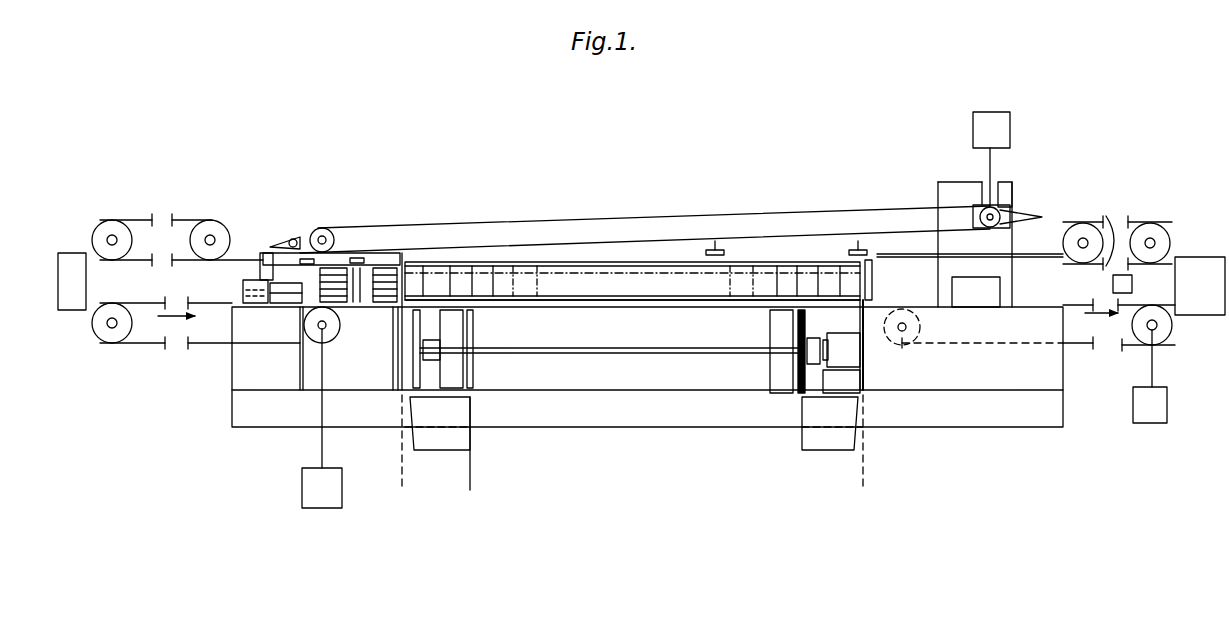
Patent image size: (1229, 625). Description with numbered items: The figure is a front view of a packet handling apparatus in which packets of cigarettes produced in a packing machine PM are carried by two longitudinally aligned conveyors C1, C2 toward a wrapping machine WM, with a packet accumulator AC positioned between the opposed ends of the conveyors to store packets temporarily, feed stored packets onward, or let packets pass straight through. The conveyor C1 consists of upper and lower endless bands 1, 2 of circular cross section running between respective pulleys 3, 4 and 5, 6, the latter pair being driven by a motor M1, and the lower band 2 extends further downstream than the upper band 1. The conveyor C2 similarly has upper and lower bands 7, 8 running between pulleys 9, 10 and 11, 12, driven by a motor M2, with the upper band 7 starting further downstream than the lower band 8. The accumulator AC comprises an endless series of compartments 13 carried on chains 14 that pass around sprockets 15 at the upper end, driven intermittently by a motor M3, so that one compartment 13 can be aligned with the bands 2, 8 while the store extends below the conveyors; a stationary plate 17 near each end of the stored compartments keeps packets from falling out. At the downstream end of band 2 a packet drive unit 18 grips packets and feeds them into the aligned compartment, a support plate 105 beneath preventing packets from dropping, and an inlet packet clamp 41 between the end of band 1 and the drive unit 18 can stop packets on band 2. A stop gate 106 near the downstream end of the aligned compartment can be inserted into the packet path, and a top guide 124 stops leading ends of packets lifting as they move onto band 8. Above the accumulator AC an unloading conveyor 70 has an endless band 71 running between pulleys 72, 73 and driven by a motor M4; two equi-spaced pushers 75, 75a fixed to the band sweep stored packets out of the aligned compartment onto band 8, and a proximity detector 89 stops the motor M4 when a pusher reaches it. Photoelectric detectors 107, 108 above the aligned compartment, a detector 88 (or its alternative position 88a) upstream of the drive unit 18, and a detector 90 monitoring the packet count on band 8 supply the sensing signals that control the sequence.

The upper endless band 1 is at (142, 258).
The lower endless band 2 is at (211, 306).
The pulley 3 is at (110, 220).
The pulley 4 is at (213, 221).
The pulley 5 is at (111, 343).
The pulley 6 is at (333, 336).
The upper endless band 7 is at (1104, 228).
The lower endless band 8 is at (1076, 310).
The pulley 9 is at (1064, 241).
The pulley 10 is at (1156, 228).
The pulley 11 is at (1170, 331).
The pulley 12 is at (906, 347).
The compartment 13 is at (528, 301).
The chain 14 is at (471, 470).
The sprocket 15 is at (474, 383).
The stationary plate 17 is at (402, 436).
The packet drive unit 18 is at (353, 308).
The inlet packet clamp 41 is at (250, 278).
The unloading conveyor 70 is at (535, 214).
The endless band 71 is at (736, 212).
The pulley 72 is at (327, 229).
The pulley 73 is at (1000, 210).
The pusher 75 is at (275, 243).
The pusher 75a is at (1043, 216).
The detector 88 is at (322, 259).
The alternative detector position 88a is at (357, 257).
The proximity detector 89 is at (295, 240).
The detector 90 is at (1113, 284).
The support plate 105 is at (378, 316).
The stop gate 106 is at (870, 258).
The photoelectric detector 107 is at (718, 249).
The photoelectric detector 108 is at (860, 249).
The top guide 124 is at (915, 253).
The packing machine PM is at (72, 253).
The conveyor C1 is at (190, 215).
The conveyor C2 is at (1135, 216).
The wrapping machine WM is at (1203, 257).
The packet accumulator AC is at (618, 284).
The motor M1 is at (301, 488).
The motor M2 is at (1152, 423).
The motor M3 is at (856, 352).
The motor M4 is at (992, 112).